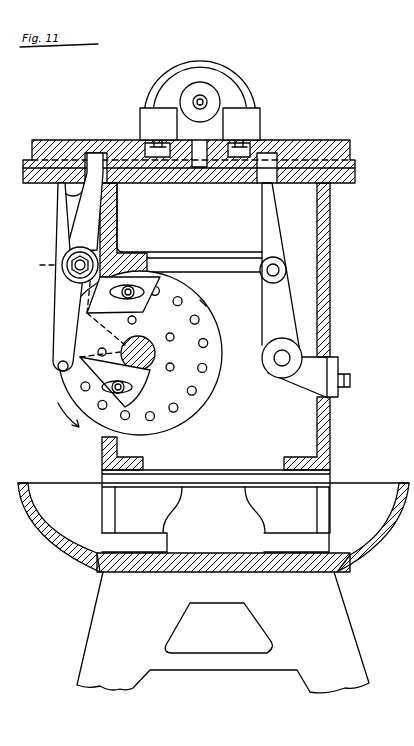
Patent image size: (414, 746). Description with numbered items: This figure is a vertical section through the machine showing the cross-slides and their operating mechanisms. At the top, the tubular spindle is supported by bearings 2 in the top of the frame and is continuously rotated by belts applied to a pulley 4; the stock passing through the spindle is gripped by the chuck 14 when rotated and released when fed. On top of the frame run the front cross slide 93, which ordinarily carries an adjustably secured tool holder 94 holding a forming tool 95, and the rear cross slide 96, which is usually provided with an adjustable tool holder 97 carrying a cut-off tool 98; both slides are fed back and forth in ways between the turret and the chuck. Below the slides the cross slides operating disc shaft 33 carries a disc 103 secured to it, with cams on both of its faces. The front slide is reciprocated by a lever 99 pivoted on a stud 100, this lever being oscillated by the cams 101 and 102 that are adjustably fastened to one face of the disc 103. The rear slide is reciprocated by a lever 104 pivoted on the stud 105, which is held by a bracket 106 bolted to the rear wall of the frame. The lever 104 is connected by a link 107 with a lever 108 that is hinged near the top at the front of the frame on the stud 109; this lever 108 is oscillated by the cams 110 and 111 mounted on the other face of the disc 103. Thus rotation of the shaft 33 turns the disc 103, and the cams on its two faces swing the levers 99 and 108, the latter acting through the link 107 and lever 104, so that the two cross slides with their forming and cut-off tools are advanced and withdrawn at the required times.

The bearings 2 is at (222, 72).
The pulley 4 is at (254, 82).
The chuck 14 is at (200, 96).
The cross-slides operating disc shaft 33 is at (157, 349).
The front cross slide 93 is at (72, 140).
The tool holder 94 is at (158, 124).
The forming tool 95 is at (190, 106).
The rear cross slide 96 is at (312, 140).
The tool holder 97 is at (241, 124).
The cut-off tool 98 is at (218, 106).
The lever 99 is at (68, 230).
The stud 100 is at (62, 264).
The cam 101 is at (137, 322).
The cam 102 is at (133, 381).
The disc 103 is at (209, 396).
The lever 104 is at (264, 222).
The stud 105 is at (272, 367).
The bracket 106 is at (309, 377).
The link 107 is at (197, 258).
The lever 108 is at (62, 213).
The stud 109 is at (58, 188).
The cam 110 is at (115, 313).
The cam 111 is at (204, 302).